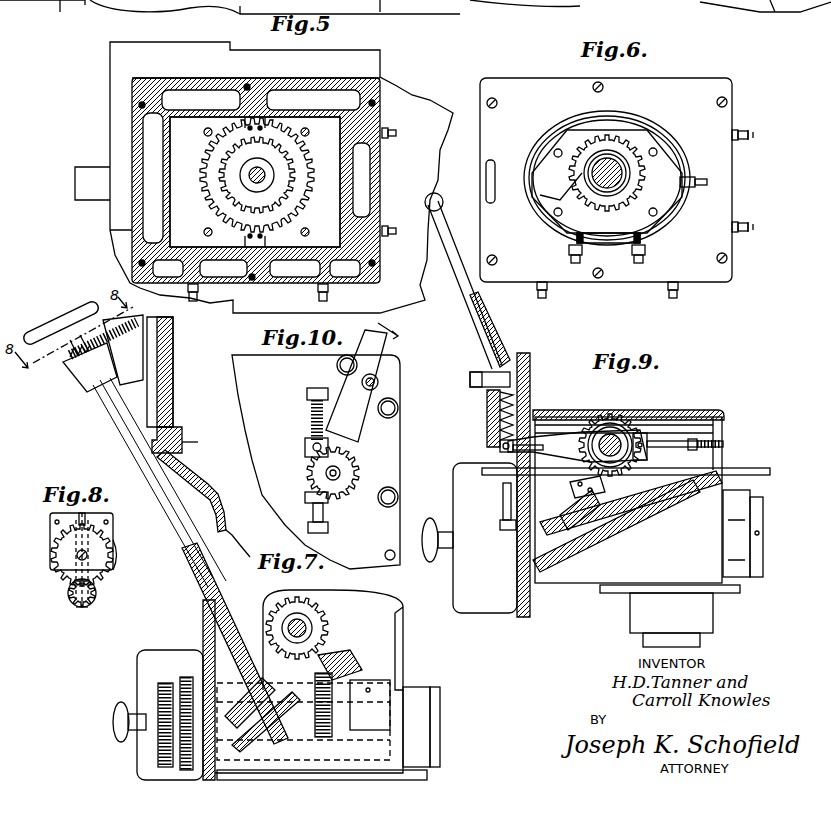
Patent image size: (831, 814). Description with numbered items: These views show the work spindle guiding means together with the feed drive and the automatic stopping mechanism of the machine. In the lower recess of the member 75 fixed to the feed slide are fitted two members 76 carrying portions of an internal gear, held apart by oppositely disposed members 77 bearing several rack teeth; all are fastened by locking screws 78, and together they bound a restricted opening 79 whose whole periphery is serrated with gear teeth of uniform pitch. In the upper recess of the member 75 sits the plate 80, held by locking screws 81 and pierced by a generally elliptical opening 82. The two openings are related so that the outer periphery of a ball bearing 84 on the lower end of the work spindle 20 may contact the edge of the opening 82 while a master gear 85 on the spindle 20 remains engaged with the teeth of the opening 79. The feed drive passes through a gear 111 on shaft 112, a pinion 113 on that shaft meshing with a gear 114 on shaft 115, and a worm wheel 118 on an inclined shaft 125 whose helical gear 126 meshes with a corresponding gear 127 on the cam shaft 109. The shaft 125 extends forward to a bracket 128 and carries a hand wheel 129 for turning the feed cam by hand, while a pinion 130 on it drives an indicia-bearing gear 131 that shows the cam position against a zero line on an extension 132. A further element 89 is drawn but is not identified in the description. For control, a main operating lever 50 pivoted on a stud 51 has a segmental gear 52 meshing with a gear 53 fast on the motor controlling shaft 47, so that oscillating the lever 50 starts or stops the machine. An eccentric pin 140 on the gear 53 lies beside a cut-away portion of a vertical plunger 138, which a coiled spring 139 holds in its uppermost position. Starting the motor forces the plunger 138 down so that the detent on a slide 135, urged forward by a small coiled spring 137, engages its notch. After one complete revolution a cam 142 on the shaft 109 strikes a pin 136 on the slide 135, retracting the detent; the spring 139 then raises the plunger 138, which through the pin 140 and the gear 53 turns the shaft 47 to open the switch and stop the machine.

In FIG. 5, the member 75 is at (138, 118).
In FIG. 6, the member 75 is at (685, 83).
In FIG. 5, the internal gear members 76 is at (192, 128).
In FIG. 5, the rack members 77 is at (258, 125).
In FIG. 5, the locking screws 78 is at (390, 128).
In FIG. 5, the restricted opening 79 is at (220, 213).
In FIG. 5, the master gear 85 is at (278, 160).
In FIG. 6, the master gear 85 is at (640, 160).
In FIG. 6, the plate 80 is at (622, 125).
In FIG. 6, the locking screws 81 is at (705, 180).
In FIG. 6, the elliptical opening 82 is at (640, 195).
In FIG. 6, the ball bearing 84 is at (592, 150).
In FIG. 6, the work spindle 20 is at (559, 186).
In FIG. 10, the main operating lever 50 is at (372, 357).
In FIG. 9, the main operating lever 50 is at (460, 322).
In FIG. 9, the stud 51 is at (470, 380).
In FIG. 10, the segmental gear 52 is at (350, 455).
In FIG. 9, the segmental gear 52 is at (490, 448).
In FIG. 10, the gear 53 is at (345, 475).
In FIG. 9, the gear 53 is at (480, 458).
In FIG. 10, the motor controlling shaft 47 is at (320, 470).
In FIG. 9, the motor controlling shaft 47 is at (745, 470).
In FIG. 10, the coiled spring 139 is at (310, 420).
In FIG. 9, the coiled spring 139 is at (487, 415).
In FIG. 10, the eccentric pin 140 is at (338, 504).
In FIG. 9, the eccentric pin 140 is at (570, 485).
In FIG. 10, the vertical plunger 138 is at (330, 525).
In FIG. 9, the vertical plunger 138 is at (500, 518).
In FIG. 9, the inclined shaft 125 is at (505, 345).
In FIG. 8, the inclined shaft 125 is at (82, 605).
In FIG. 7, the inclined shaft 125 is at (175, 525).
In FIG. 9, the slide 135 is at (557, 432).
In FIG. 9, the gear 127 is at (598, 425).
In FIG. 7, the gear 127 is at (270, 605).
In FIG. 9, the cam shaft 109 is at (620, 425).
In FIG. 7, the cam shaft 109 is at (312, 628).
In FIG. 9, the coiled spring 137 is at (725, 432).
In FIG. 9, the pin 136 is at (655, 451).
In FIG. 9, the helical gear 126 is at (566, 510).
In FIG. 9, the cam 142 is at (640, 482).
In FIG. 9, the worm wheel 118 is at (575, 535).
In FIG. 7, the worm wheel 118 is at (266, 725).
In FIG. 8, the gear 131 is at (60, 548).
In FIG. 7, the gear 131 is at (100, 360).
In FIG. 8, the extension 132 is at (88, 522).
In FIG. 7, the extension 132 is at (108, 345).
In FIG. 8, the bracket 128 is at (113, 562).
In FIG. 7, the bracket 128 is at (82, 385).
In FIG. 8, the pinion 130 is at (70, 593).
In FIG. 7, the pinion 130 is at (68, 360).
In FIG. 7, the hand wheel 129 is at (30, 345).
In FIG. 7, the gear 111 is at (185, 677).
In FIG. 7, the gear 89 is at (160, 685).
In FIG. 7, the shaft 112 is at (222, 700).
In FIG. 7, the gear 114 is at (332, 664).
In FIG. 7, the pinion 113 is at (318, 740).
In FIG. 7, the shaft 115 is at (385, 665).